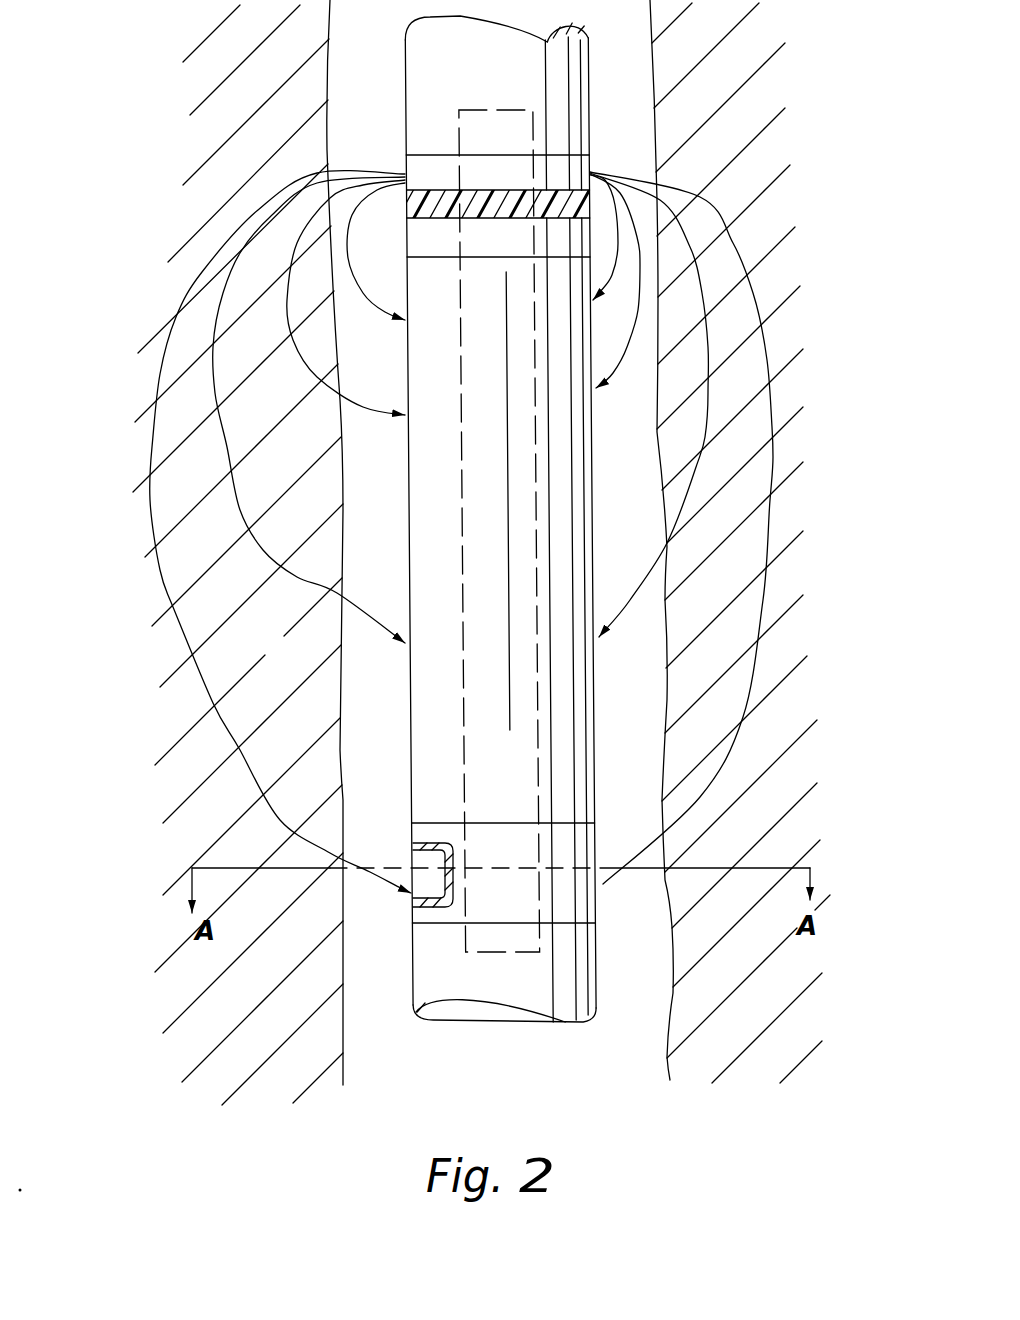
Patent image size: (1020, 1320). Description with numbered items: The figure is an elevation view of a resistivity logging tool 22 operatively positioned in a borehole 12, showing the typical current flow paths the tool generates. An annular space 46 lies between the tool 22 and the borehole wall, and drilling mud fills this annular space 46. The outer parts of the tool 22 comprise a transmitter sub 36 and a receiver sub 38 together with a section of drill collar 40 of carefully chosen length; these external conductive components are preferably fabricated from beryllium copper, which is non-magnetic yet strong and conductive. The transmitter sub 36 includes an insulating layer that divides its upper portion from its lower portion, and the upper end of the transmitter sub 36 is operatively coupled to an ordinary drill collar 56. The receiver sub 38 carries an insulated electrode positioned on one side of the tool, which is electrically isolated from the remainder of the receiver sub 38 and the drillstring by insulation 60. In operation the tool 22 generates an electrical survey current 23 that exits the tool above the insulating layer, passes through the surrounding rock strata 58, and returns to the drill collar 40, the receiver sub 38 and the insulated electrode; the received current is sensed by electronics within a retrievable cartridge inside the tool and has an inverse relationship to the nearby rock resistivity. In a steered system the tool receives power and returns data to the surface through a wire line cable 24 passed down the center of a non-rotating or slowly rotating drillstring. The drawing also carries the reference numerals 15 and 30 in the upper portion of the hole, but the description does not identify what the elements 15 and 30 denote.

The borehole 12 is at (673, 995).
The logging tool lower section 15 is at (407, 983).
The resistivity logging tool 22 is at (133, 325).
The electrical survey current 23 is at (700, 473).
The wire line cable 24 is at (430, 863).
The formation upper section 30 is at (232, 124).
The transmitter sub 36 is at (590, 230).
The receiver sub 38 is at (600, 887).
The drill collar 40 is at (657, 432).
The annular space 46 is at (355, 690).
The ordinary drill collar 56 is at (590, 110).
The rock strata 58 is at (247, 649).
The insulation 60 is at (413, 927).